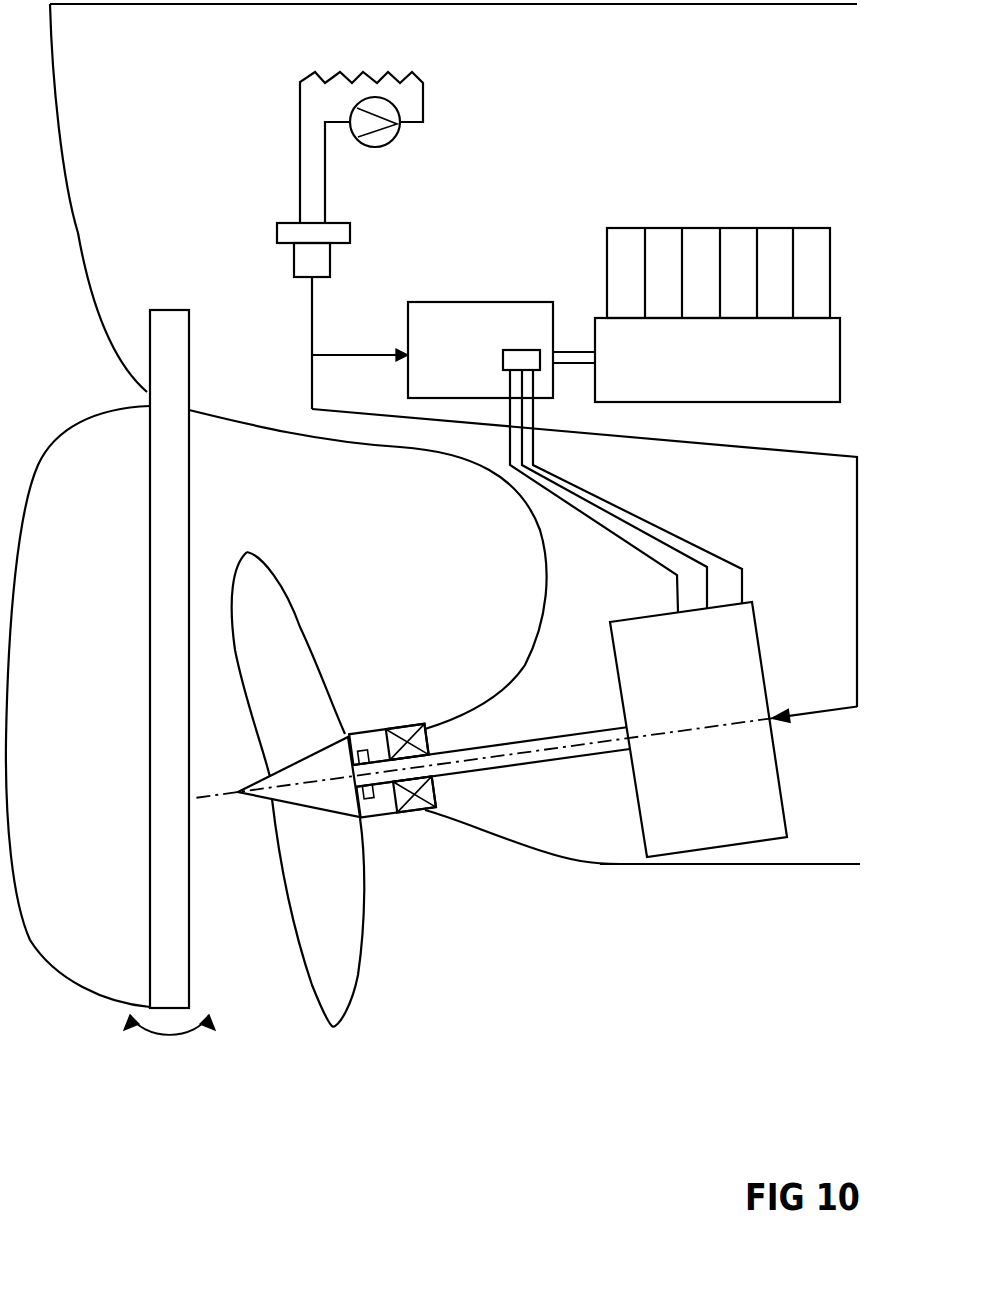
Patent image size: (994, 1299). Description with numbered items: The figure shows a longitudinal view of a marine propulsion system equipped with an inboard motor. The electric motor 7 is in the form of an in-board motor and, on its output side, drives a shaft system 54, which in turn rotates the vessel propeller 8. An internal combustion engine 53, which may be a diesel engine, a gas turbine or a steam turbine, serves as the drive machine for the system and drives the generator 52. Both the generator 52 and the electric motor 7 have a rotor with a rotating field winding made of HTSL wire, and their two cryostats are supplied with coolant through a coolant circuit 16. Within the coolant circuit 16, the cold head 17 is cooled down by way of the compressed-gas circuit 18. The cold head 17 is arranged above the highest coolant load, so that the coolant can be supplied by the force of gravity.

The electric motor 7 is at (782, 798).
The vessel propeller 8 is at (363, 967).
The coolant circuit 16 is at (790, 453).
The cold head 17 is at (294, 259).
The compressed-gas circuit 18 is at (423, 107).
The generator 52 is at (480, 302).
The internal combustion engine 53 is at (777, 224).
The shaft system 54 is at (538, 775).